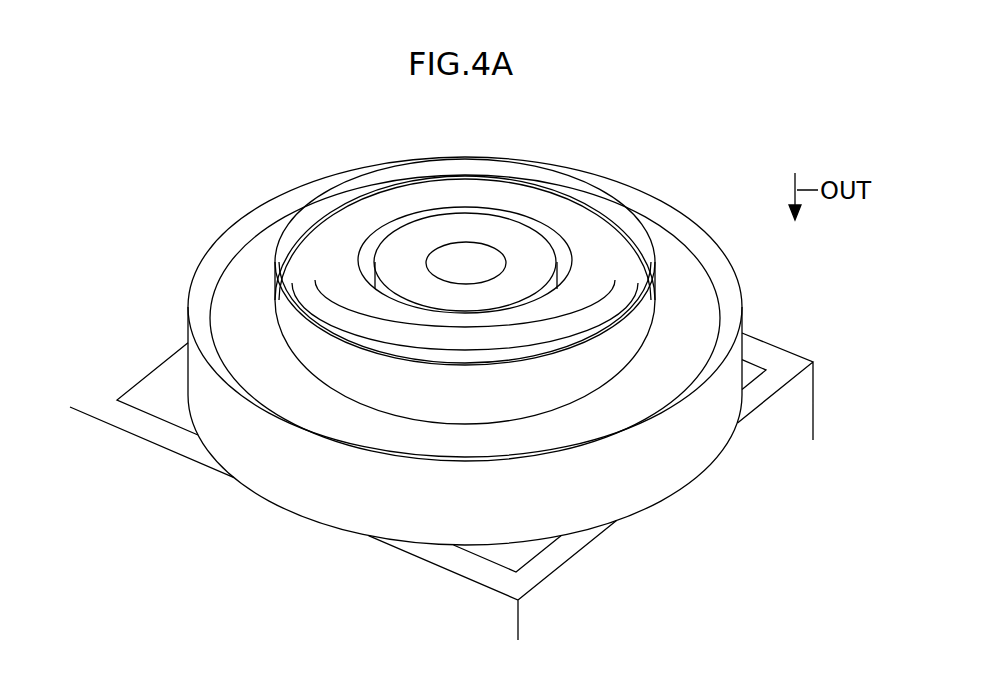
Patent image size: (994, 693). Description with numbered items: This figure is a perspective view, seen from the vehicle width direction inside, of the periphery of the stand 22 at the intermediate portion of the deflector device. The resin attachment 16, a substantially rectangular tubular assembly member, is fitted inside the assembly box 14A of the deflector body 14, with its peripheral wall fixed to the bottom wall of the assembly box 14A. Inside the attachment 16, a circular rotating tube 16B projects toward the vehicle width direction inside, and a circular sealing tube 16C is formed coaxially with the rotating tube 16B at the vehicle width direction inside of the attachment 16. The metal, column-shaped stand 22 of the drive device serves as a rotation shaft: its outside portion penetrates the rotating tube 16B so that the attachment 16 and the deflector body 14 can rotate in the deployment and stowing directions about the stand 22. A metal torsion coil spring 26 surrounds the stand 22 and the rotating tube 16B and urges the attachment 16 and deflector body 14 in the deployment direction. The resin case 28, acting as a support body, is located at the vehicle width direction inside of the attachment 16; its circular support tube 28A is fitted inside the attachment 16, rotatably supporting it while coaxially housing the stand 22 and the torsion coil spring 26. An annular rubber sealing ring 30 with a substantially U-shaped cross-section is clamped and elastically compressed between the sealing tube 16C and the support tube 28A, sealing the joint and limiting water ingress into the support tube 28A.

The deflector body 14 is at (476, 473).
The assembly box 14A is at (786, 349).
The attachment 16 is at (170, 380).
The rotating tube 16B is at (363, 260).
The sealing tube 16C is at (223, 237).
The stand 22 is at (485, 208).
The torsion coil spring 26 is at (575, 198).
The case 28 is at (505, 281).
The support tube 28A is at (653, 233).
The sealing ring 30 is at (687, 265).